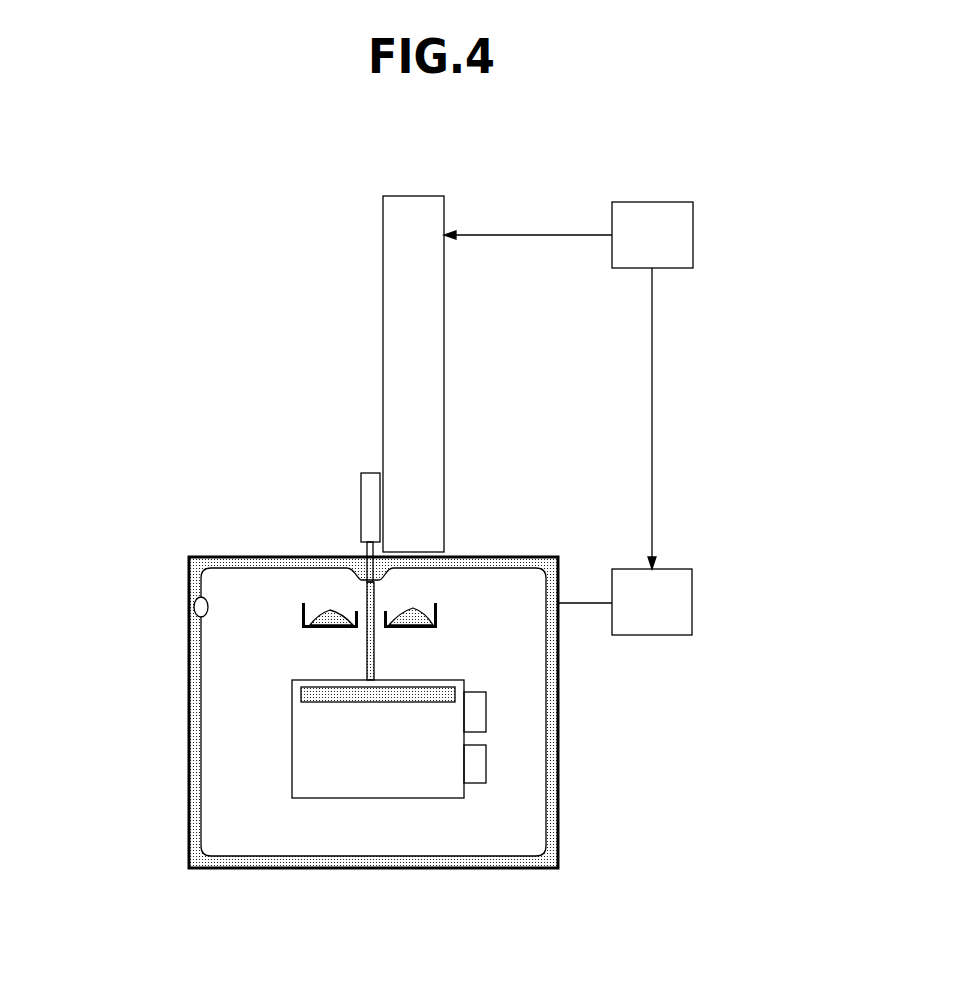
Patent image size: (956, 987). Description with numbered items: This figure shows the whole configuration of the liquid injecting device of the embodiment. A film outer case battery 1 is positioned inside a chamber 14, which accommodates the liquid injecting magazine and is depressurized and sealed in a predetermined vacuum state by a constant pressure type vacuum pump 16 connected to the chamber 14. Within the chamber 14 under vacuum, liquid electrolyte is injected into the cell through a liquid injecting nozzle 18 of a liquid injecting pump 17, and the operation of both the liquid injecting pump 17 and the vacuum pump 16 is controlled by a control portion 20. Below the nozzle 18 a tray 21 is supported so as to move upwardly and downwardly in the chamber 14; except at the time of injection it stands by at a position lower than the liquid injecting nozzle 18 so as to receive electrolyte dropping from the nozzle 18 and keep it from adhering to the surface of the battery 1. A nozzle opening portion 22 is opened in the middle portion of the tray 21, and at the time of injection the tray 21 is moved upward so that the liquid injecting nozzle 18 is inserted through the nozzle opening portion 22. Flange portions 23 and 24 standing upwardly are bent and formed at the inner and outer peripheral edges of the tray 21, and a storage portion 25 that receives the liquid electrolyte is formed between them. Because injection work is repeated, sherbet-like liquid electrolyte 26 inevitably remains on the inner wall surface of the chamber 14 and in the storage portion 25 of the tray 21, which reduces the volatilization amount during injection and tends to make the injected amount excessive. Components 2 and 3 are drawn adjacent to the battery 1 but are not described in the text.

The film outer case battery 1 is at (355, 787).
The first electrode 2 is at (480, 712).
The second electrode 3 is at (480, 763).
The chamber 14 is at (558, 817).
The constant pressure type vacuum pump 16 is at (692, 603).
The liquid injecting pump 17 is at (444, 335).
The liquid injecting nozzle 18 is at (360, 556).
The control portion 20 is at (693, 236).
The tray 21 is at (297, 603).
The nozzle opening portion 22 is at (362, 622).
The flange portion 23 is at (440, 602).
The flange portion 24 is at (385, 610).
The storage portion 25 is at (438, 610).
The sherbet-like liquid electrolyte 26 is at (195, 595).